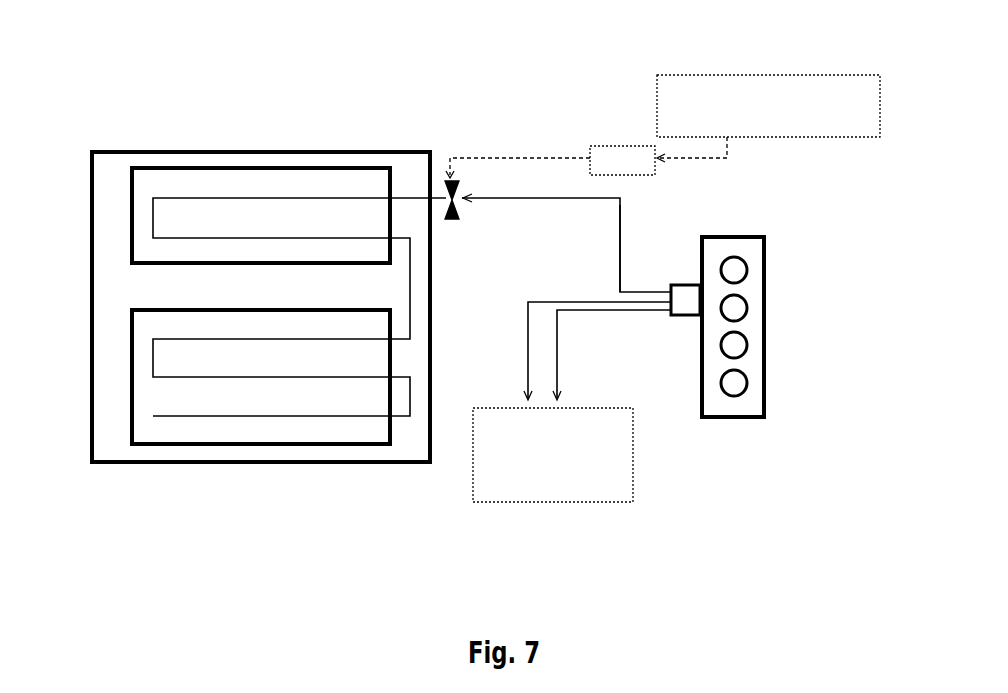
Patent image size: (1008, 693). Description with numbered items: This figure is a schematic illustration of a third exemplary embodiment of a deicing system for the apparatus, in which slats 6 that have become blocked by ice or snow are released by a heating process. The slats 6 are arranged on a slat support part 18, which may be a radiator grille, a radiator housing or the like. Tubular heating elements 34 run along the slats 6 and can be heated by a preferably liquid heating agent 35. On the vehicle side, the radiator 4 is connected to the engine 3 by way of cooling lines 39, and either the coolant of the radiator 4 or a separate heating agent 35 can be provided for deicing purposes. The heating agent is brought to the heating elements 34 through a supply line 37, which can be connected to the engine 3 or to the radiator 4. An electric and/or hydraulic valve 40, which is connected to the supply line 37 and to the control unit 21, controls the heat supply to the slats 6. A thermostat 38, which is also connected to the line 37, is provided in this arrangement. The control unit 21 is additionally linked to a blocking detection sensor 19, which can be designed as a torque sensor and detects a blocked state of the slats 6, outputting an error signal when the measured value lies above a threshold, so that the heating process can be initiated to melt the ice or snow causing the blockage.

The engine 3 is at (758, 300).
The radiator 4 is at (613, 452).
The slats 6 is at (130, 217).
The slat support part 18 is at (133, 452).
The blocking detection sensor 19 is at (812, 97).
The control unit 21 is at (623, 150).
The tubular heating elements 34 is at (413, 284).
The heating agent 35 is at (502, 198).
The supply line 37 is at (620, 250).
The thermostat 38 is at (690, 307).
The cooling lines 39 is at (527, 319).
The valve 40 is at (448, 178).